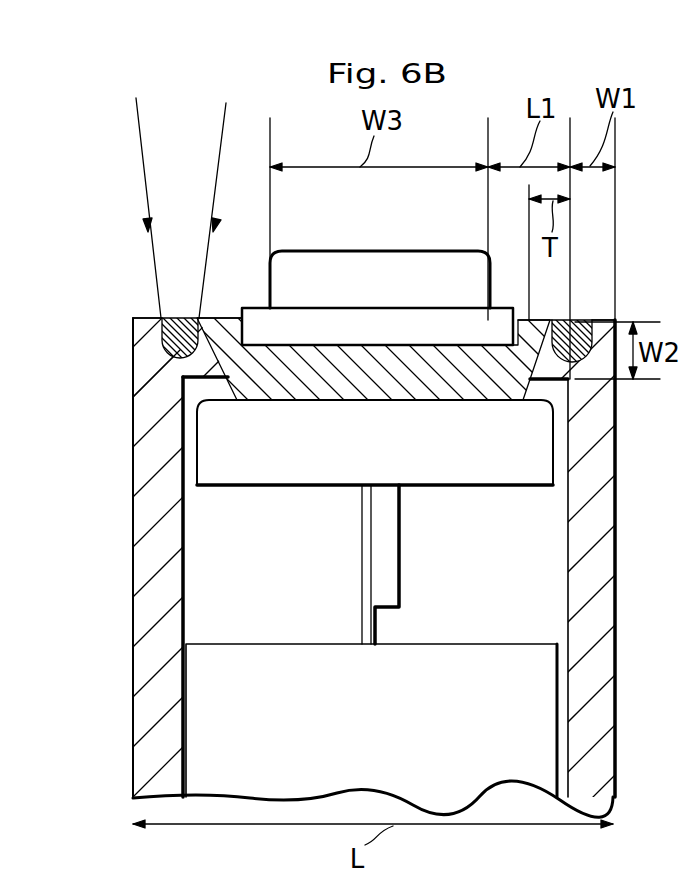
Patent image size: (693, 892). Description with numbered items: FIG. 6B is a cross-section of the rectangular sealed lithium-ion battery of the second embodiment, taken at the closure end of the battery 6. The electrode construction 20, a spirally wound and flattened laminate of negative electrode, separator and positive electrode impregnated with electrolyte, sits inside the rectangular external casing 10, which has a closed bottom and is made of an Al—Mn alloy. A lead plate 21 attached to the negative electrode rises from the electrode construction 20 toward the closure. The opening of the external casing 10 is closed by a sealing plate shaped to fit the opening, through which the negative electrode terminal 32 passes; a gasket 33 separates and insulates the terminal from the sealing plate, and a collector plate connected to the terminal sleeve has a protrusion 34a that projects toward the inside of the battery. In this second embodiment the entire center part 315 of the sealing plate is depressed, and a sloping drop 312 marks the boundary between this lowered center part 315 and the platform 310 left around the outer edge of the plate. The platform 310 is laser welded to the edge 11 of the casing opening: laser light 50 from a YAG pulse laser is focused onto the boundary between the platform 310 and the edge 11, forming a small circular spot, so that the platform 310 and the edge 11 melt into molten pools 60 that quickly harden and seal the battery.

The light source device 6 is at (580, 342).
The external casing 10 is at (150, 535).
The edge of the opening 11 is at (153, 352).
The electrode construction 20 is at (232, 732).
The lead plate 21 is at (360, 616).
The negative electrode terminal 32 is at (376, 250).
The gasket 33 is at (513, 473).
The protrusion 34a is at (387, 565).
The laser light 50 is at (215, 162).
The molten pool 60 is at (163, 337).
The platform 310 is at (556, 318).
The drop 312 is at (228, 318).
The center part 315 is at (377, 398).